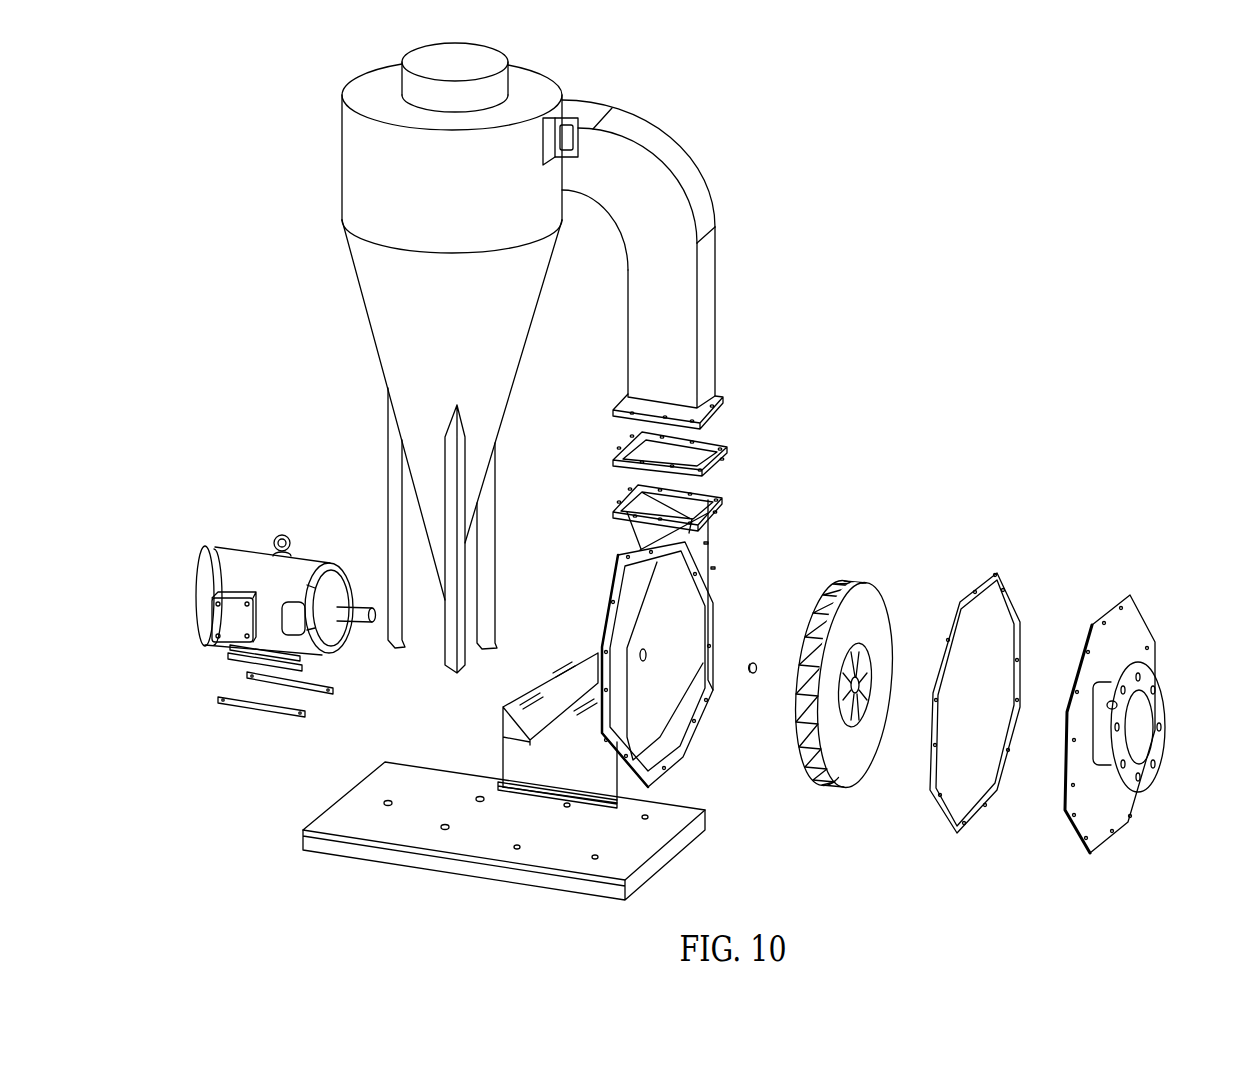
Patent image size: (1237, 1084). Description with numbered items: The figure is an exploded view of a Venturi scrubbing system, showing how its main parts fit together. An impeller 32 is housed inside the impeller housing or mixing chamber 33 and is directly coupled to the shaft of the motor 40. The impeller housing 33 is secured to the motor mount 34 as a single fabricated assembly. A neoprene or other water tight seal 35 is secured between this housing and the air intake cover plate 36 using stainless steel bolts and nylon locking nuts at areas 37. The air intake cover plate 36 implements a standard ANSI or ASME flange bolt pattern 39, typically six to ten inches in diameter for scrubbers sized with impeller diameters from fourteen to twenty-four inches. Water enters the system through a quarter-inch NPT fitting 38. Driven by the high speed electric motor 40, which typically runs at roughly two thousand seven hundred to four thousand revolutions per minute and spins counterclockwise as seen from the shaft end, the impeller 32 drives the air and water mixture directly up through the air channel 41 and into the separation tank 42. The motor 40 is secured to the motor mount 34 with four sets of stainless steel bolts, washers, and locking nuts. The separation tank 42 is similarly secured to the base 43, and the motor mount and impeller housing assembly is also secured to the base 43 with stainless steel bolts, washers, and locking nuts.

The impeller 32 is at (866, 562).
The impeller housing or mixing chamber 33 is at (724, 589).
The motor mount 34 is at (552, 662).
The water tight seal 35 is at (1016, 575).
The air intake cover plate 36 is at (1127, 627).
The areas 37 is at (699, 771).
The NPT fitting 38 is at (1094, 696).
The flange bolt pattern 39 is at (1150, 788).
The motor 40 is at (255, 536).
The air channel 41 is at (701, 258).
The separation tank 42 is at (393, 205).
The base 43 is at (378, 814).